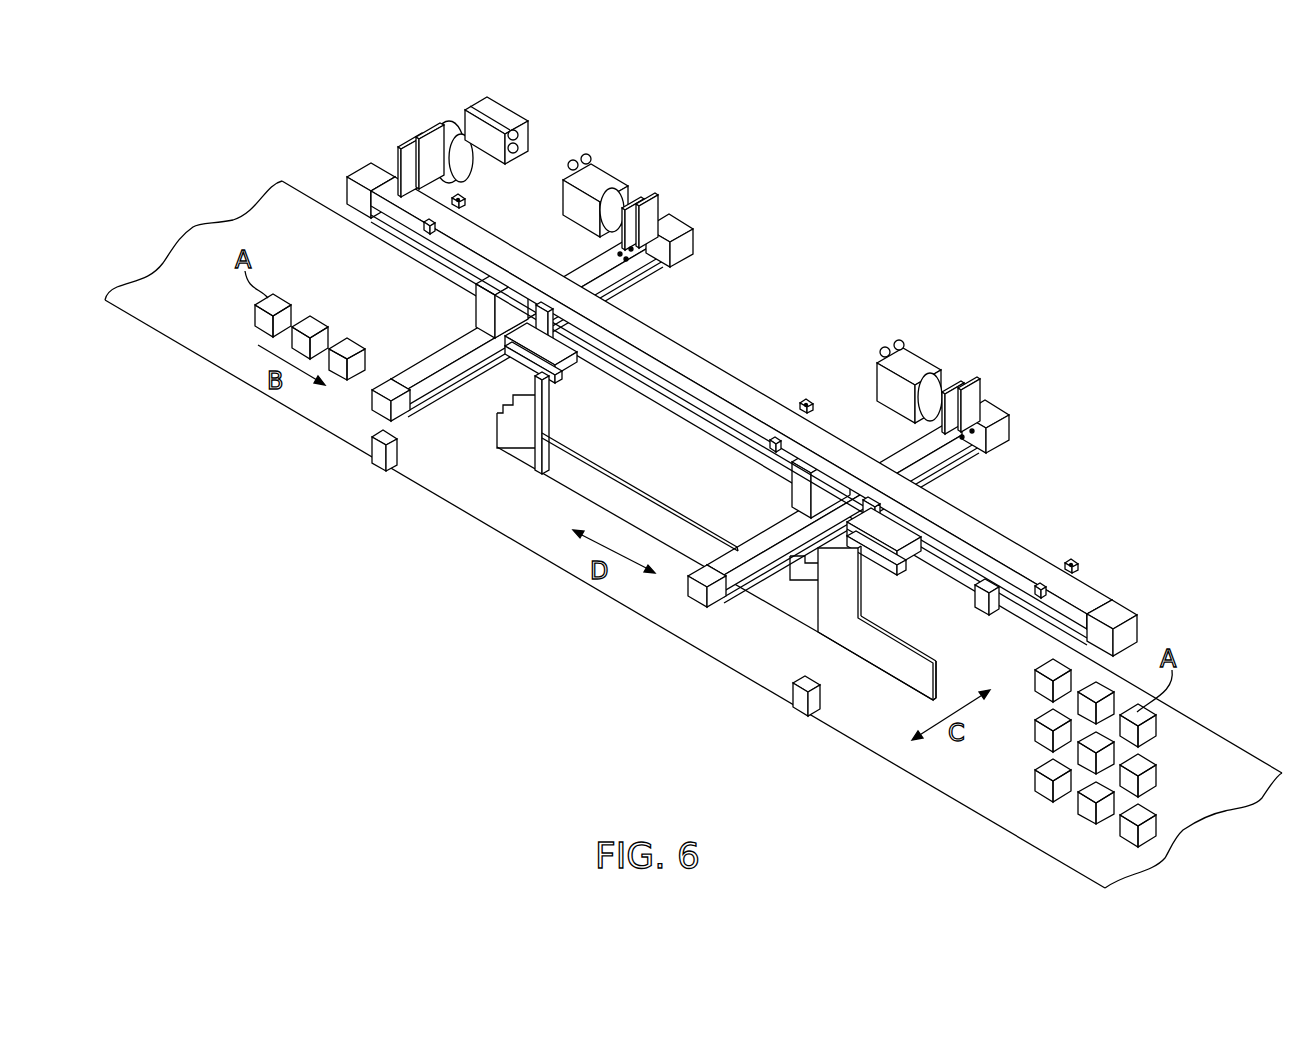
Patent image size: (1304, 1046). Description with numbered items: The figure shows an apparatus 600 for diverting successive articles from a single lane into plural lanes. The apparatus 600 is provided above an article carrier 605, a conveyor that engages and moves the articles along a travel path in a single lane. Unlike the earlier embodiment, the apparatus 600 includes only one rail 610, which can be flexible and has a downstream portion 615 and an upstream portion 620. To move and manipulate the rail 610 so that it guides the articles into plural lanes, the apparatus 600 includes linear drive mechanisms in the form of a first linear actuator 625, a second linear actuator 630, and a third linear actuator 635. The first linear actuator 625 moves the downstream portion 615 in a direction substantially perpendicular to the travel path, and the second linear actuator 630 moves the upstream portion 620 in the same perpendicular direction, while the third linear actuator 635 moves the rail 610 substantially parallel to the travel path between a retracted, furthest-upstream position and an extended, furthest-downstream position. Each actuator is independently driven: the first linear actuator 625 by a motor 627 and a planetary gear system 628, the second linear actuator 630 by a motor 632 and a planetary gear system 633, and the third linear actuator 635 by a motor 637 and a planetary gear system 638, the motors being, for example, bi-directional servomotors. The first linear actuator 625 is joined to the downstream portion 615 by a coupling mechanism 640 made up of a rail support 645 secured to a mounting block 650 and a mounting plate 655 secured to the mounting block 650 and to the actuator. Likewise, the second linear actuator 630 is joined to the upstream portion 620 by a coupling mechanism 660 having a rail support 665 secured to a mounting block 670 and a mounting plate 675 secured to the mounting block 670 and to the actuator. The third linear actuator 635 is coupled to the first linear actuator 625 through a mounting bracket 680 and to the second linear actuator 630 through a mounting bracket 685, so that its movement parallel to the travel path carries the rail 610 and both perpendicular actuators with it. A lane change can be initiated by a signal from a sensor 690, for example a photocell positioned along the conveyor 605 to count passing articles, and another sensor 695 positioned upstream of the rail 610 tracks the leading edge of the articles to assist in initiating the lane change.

The apparatus 600 is at (880, 209).
The article carrier 605 is at (467, 480).
The rail 610 is at (597, 493).
The downstream portion 615 is at (898, 702).
The upstream portion 620 is at (510, 472).
The first linear actuator 625 is at (973, 463).
The motor 627 is at (915, 352).
The planetary gear system 628 is at (1008, 388).
The second linear actuator 630 is at (648, 280).
The motor 632 is at (603, 165).
The planetary gear system 633 is at (683, 193).
The third linear actuator 635 is at (750, 395).
The motor 637 is at (500, 100).
The planetary gear system 638 is at (417, 123).
The coupling mechanism 640 is at (878, 586).
The rail support 645 is at (863, 643).
The mounting block 650 is at (797, 578).
The mounting plate 655 is at (873, 537).
The coupling mechanism 660 is at (562, 408).
The rail support 665 is at (523, 415).
The mounting block 670 is at (556, 375).
The mounting plate 675 is at (540, 335).
The mounting bracket 680 is at (815, 482).
The mounting bracket 685 is at (495, 300).
The sensor 690 is at (797, 705).
The sensor 695 is at (372, 447).